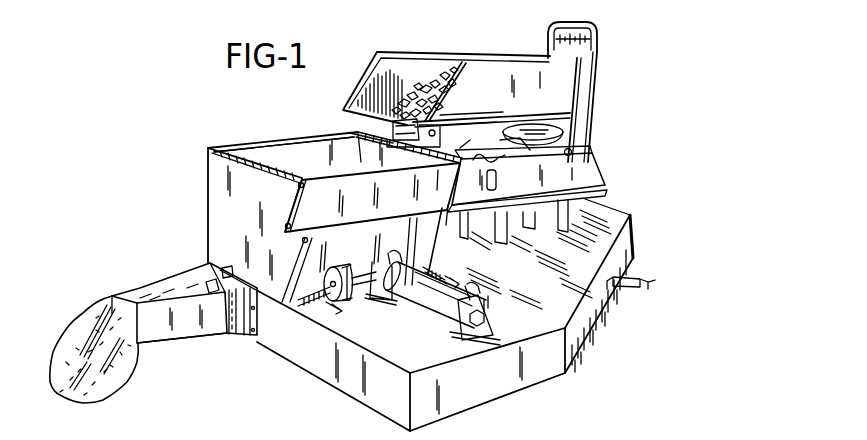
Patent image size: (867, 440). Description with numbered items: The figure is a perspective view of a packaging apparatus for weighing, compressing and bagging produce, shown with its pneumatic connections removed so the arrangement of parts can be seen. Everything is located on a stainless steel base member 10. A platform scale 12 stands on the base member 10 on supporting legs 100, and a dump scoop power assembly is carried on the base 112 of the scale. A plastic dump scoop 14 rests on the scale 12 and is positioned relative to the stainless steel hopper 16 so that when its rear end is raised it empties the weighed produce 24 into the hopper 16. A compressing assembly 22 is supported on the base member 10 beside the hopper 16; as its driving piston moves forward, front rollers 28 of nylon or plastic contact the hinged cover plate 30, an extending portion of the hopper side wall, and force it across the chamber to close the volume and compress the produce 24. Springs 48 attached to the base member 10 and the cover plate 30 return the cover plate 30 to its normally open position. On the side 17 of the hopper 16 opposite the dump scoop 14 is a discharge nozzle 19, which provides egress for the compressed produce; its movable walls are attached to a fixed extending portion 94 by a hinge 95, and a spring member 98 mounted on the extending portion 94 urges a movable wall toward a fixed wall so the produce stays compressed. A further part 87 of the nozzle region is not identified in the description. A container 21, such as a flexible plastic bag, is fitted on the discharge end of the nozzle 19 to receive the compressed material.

The base member 10 is at (632, 215).
The platform scale 12 is at (594, 87).
The dump scoop 14 is at (463, 57).
The hopper 16 is at (272, 142).
The side of the hopper 17 is at (206, 182).
The discharge nozzle 19 is at (152, 282).
The container 21 is at (68, 336).
The compressing assembly 22 is at (440, 317).
The produce 24 is at (420, 68).
The front rollers 28 is at (350, 298).
The hinged cover plate 30 is at (361, 258).
The springs 48 is at (313, 310).
The chute bottom 87 is at (183, 337).
The fixed extending portion 94 is at (242, 336).
The hinge 95 is at (230, 335).
The spring member 98 is at (212, 285).
The supporting legs 100 is at (561, 233).
The base of scale 112 is at (590, 170).